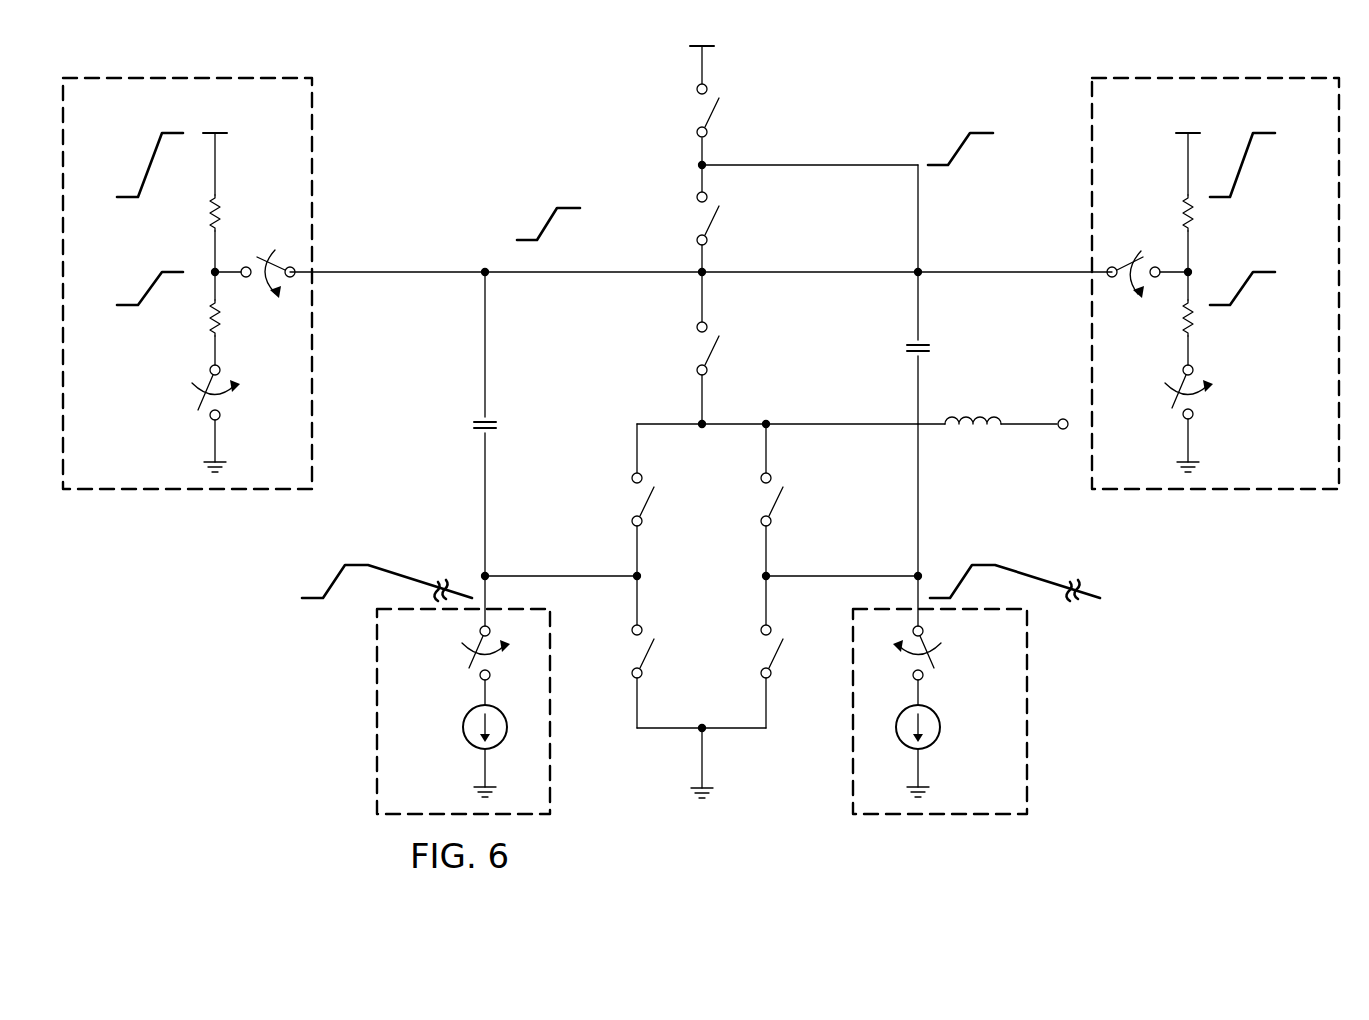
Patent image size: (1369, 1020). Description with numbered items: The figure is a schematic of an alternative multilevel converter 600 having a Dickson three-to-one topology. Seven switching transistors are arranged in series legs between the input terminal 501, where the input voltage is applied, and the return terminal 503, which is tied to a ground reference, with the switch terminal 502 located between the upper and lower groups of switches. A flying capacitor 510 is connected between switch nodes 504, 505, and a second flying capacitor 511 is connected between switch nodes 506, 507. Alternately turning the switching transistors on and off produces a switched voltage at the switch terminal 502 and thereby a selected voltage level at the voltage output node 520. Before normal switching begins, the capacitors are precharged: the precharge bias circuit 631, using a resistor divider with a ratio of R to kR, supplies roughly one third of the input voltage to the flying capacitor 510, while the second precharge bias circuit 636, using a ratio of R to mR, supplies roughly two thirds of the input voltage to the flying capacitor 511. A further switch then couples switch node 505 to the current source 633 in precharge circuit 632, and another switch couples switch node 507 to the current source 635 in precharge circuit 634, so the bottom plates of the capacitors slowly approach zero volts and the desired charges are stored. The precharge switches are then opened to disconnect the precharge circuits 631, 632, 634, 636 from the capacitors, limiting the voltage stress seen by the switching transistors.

The multilevel converter 600 is at (466, 52).
The input terminal 501 is at (712, 44).
The switch terminal 502 is at (706, 434).
The return terminal 503 is at (712, 792).
The switch node 504 is at (706, 282).
The switch node 505 is at (631, 584).
The switch node 506 is at (706, 158).
The switch node 507 is at (772, 584).
The flying capacitor 510 is at (473, 426).
The second flying capacitor 511 is at (906, 354).
The voltage output node 520 is at (1030, 430).
The precharge bias circuit 631 is at (175, 497).
The precharge circuit 632 is at (372, 725).
The current source 633 is at (464, 727).
The precharge circuit 634 is at (1034, 727).
The current source 635 is at (942, 730).
The second precharge bias circuit 636 is at (1224, 497).